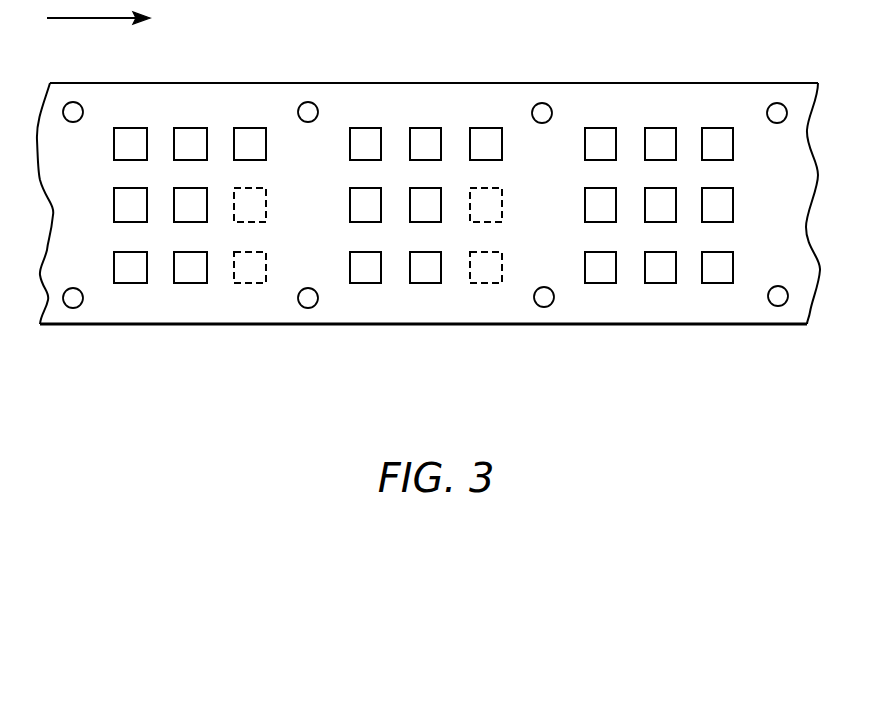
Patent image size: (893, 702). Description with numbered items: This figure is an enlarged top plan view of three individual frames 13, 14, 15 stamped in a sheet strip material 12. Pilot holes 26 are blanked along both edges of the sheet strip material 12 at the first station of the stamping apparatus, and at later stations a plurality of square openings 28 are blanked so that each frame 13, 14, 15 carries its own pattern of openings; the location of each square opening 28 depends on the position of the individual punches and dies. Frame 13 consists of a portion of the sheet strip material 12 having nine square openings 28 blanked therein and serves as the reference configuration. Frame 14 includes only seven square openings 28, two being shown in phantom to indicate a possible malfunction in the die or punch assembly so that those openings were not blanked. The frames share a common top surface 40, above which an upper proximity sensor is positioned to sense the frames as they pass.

The sheet strip material 12 is at (446, 83).
The frame 13 is at (783, 353).
The frame 14 is at (310, 350).
The frame 15 is at (310, 350).
The pilot holes 26 is at (79, 108).
The square openings 28 is at (128, 128).
The common top surface 40 is at (728, 97).